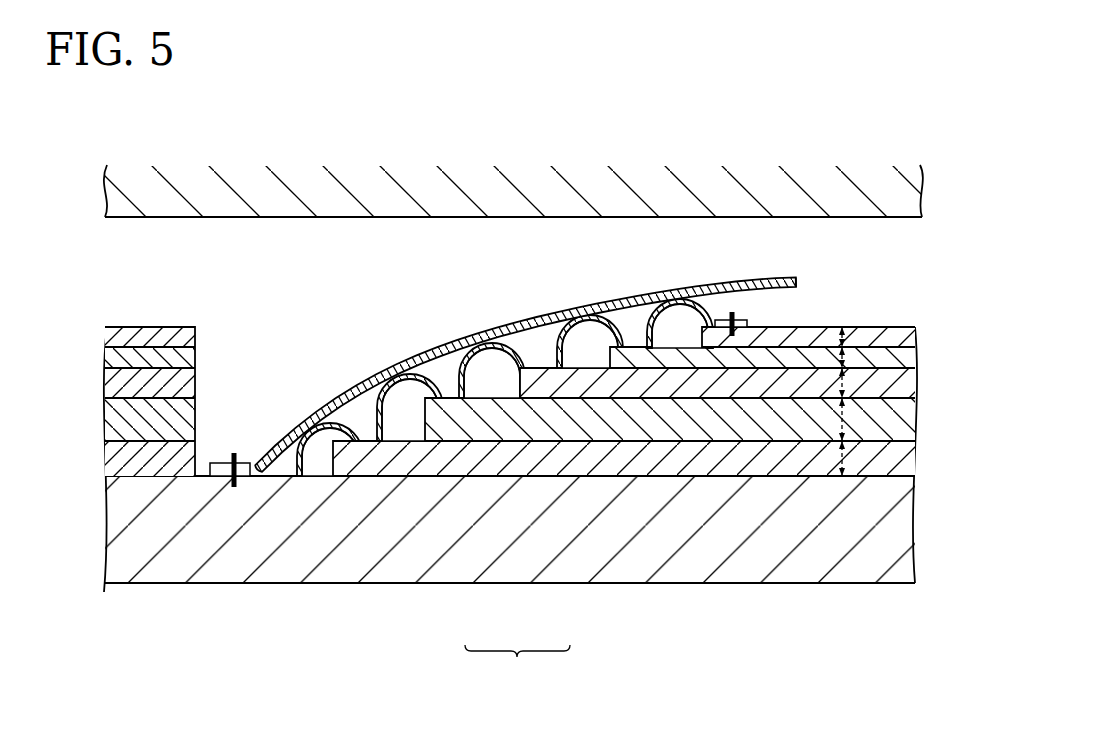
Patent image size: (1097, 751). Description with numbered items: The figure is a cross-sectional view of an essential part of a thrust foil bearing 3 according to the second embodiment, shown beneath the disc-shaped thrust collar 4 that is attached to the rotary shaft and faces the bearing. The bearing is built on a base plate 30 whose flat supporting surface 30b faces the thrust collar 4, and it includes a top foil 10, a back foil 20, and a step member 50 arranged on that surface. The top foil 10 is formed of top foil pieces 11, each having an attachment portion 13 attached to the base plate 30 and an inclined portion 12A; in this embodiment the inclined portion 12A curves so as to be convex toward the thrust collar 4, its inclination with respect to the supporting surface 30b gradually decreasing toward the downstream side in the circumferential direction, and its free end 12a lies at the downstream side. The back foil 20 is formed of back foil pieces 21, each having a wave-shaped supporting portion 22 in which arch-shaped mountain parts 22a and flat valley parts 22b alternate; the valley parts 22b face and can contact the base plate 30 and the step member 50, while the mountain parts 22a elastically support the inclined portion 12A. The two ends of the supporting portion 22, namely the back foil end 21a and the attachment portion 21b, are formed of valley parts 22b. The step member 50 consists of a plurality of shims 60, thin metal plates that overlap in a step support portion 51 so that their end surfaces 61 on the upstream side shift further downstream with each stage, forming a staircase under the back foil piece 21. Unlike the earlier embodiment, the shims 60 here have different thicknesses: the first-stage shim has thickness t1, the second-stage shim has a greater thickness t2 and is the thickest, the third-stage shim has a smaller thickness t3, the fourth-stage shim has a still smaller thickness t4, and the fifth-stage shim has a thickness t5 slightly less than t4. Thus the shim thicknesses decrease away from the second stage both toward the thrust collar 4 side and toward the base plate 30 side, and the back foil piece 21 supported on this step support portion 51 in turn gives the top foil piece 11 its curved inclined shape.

The thrust foil bearing 3 is at (274, 327).
The thrust collar 4 is at (546, 224).
The top foil 10 is at (564, 350).
The top foil piece 11 is at (564, 350).
The inclined portion 12A is at (377, 373).
The film end portion 12a is at (796, 281).
The attachment portion 13 is at (234, 452).
The back foil 20 is at (598, 517).
The back foil piece 21 is at (553, 367).
The back foil end 21a is at (297, 474).
The attachment portion 21b is at (740, 318).
The supporting portion 22 is at (517, 668).
The mountain part 22a is at (503, 318).
The valley part 22b is at (536, 345).
The base plate 30 is at (158, 585).
The supporting surface 30b is at (250, 478).
The step member 50 is at (145, 328).
The step support portion 51 is at (605, 488).
The shim 60 is at (605, 488).
The end surface 61 is at (318, 458).
The thickness t1 is at (846, 458).
The thickness t2 is at (846, 419).
The thickness t3 is at (846, 384).
The thickness t4 is at (846, 358).
The thickness t5 is at (846, 336).